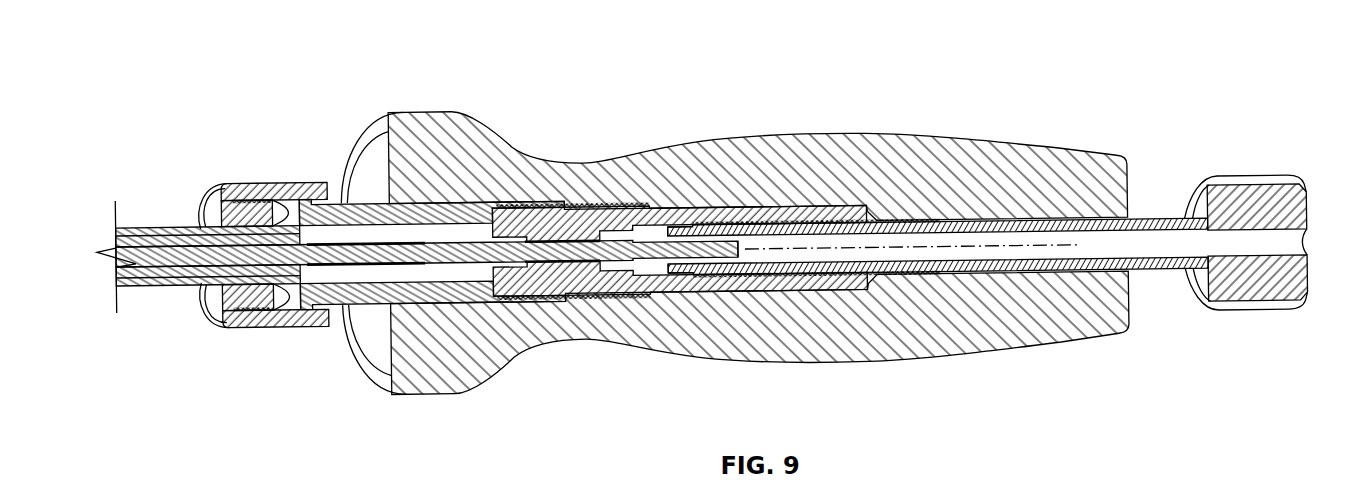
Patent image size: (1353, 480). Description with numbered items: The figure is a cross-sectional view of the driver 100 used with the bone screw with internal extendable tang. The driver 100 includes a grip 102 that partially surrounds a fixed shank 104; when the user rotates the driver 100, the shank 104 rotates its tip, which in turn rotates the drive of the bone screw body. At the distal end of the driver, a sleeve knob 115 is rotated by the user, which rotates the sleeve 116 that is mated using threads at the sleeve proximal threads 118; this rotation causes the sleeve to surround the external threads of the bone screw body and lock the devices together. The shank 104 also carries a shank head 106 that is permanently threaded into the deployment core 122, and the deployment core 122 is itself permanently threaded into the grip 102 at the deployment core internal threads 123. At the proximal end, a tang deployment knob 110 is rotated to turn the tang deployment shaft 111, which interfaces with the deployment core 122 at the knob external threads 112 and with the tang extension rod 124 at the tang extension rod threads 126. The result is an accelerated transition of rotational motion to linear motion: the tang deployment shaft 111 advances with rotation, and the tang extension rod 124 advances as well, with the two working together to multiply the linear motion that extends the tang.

The driver 100 is at (701, 224).
The grip 102 is at (735, 238).
The fixed shank 104 is at (431, 212).
The shank head 106 is at (679, 200).
The tang deployment knob 110 is at (1245, 213).
The tang deployment shaft 111 is at (939, 342).
The knob external threads 112 is at (937, 168).
The sleeve knob 115 is at (263, 224).
The sleeve 116 is at (208, 239).
The sleeve proximal threads 118 is at (261, 289).
The deployment core 122 is at (574, 304).
The deployment core internal threads 123 is at (418, 332).
The tang extension rod 124 is at (652, 311).
The tang extension rod threads 126 is at (720, 320).